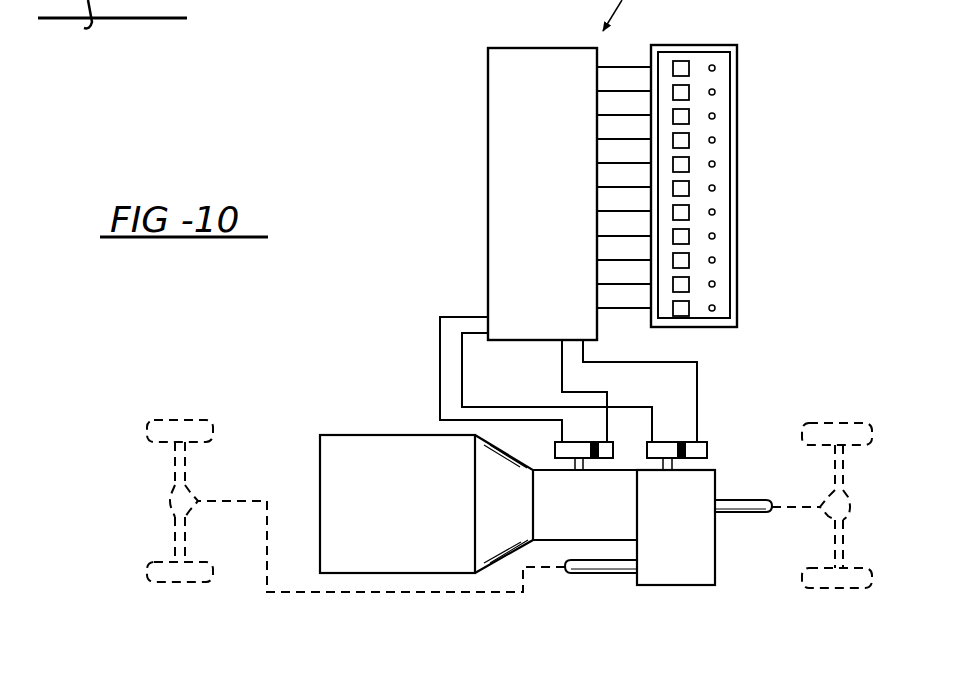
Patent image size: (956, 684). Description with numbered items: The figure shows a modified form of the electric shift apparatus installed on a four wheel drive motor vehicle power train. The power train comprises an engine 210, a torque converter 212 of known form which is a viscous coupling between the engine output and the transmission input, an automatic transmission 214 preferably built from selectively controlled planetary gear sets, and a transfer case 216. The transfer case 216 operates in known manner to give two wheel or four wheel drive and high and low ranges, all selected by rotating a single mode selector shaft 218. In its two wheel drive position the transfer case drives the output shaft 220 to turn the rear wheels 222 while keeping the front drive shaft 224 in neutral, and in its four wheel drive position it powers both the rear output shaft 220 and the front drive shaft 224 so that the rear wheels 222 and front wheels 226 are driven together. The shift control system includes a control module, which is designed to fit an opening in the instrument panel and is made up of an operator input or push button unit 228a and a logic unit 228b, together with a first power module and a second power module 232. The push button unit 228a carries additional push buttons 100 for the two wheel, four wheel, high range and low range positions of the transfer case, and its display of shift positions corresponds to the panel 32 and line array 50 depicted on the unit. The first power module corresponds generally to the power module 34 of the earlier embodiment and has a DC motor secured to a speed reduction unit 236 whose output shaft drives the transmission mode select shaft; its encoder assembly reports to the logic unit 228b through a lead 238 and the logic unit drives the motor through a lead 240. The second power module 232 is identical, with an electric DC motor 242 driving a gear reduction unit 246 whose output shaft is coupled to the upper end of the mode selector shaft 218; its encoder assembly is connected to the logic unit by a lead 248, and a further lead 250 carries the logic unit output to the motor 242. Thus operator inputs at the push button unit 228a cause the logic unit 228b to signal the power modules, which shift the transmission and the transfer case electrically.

The gear selector display panel 32 is at (746, 198).
The power module 34 is at (478, 163).
The display lines 50 is at (626, 66).
The additional push buttons 100 is at (689, 70).
The push button unit 228a is at (727, 45).
The logic unit 228b is at (505, 48).
The engine 210 is at (416, 522).
The torque converter 212 is at (521, 519).
The transmission 214 is at (598, 537).
The transfer case 216 is at (689, 532).
The mode selector shaft 218 is at (682, 466).
The output shaft 220 is at (740, 515).
The rear wheels 222 is at (858, 424).
The front drive shaft 224 is at (617, 575).
The front wheels 226 is at (147, 429).
The second power module 232 is at (670, 430).
The speed reduction unit 236 is at (577, 450).
The lead 238 is at (440, 348).
The lead 240 is at (562, 370).
The electric DC motor 242 is at (707, 452).
The gear reduction unit 246 is at (681, 446).
The lead 248 is at (462, 379).
The lead 250 is at (697, 380).